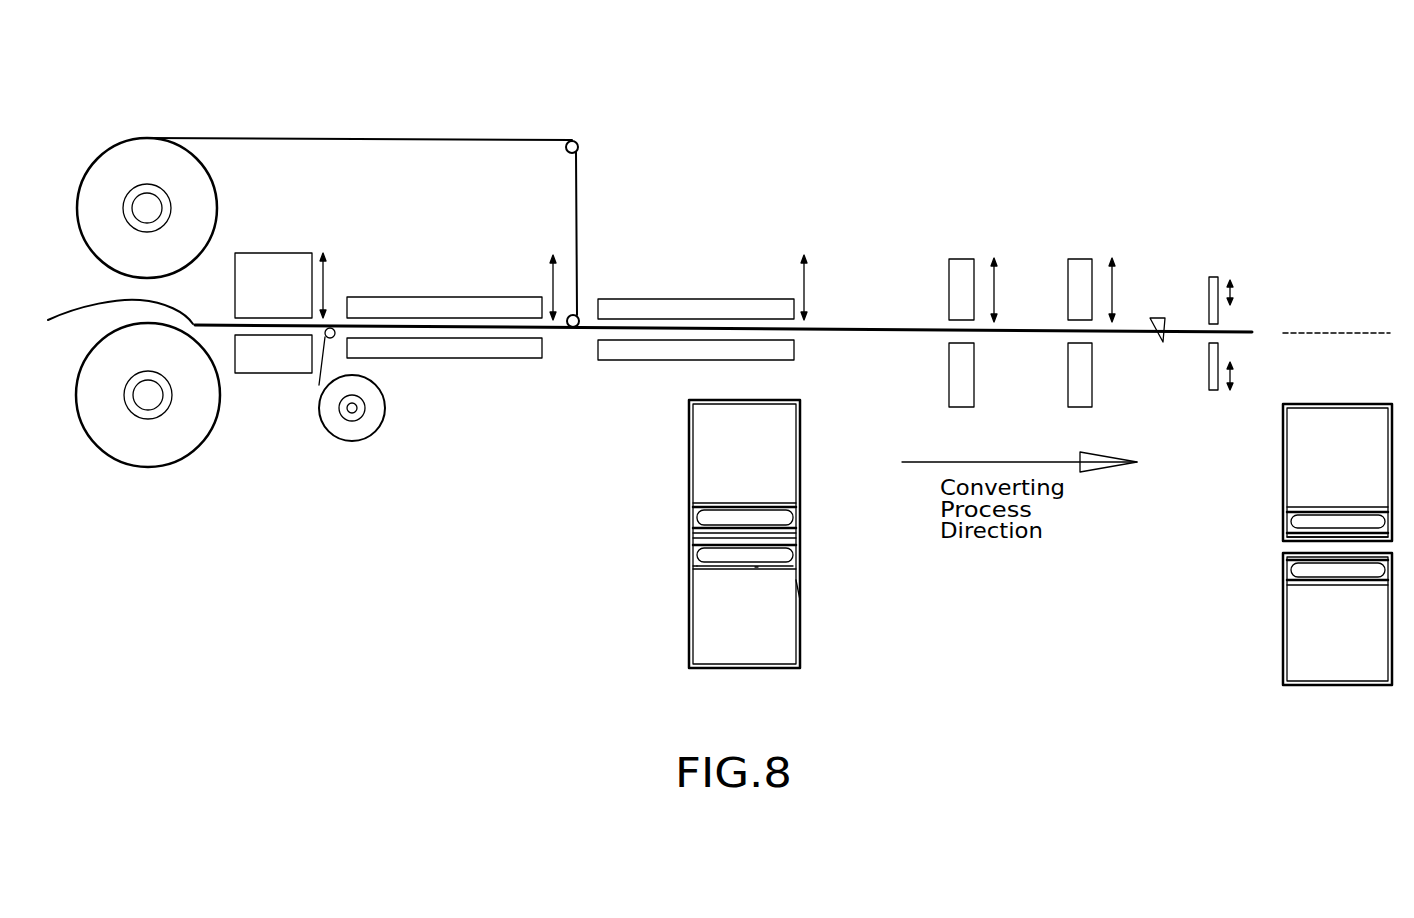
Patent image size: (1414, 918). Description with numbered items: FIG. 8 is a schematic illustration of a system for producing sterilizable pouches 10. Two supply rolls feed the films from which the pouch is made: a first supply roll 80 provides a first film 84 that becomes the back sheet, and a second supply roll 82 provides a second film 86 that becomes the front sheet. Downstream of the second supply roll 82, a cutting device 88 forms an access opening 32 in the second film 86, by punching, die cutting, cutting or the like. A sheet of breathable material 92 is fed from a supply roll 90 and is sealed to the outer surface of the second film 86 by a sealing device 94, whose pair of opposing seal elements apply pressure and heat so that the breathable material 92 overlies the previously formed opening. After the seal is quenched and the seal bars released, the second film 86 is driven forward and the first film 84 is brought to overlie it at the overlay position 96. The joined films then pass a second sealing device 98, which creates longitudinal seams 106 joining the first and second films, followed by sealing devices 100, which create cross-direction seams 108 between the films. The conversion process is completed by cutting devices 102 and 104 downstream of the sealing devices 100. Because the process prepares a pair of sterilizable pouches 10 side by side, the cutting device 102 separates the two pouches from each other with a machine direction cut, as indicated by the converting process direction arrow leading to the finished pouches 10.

The sterilizable pouch 10 is at (803, 478).
The access opening 32 is at (697, 567).
The first supply roll 80 is at (165, 137).
The second supply roll 82 is at (145, 472).
The first film 84 is at (420, 138).
The second film 86 is at (107, 321).
The cutting device 88 is at (253, 252).
The supply roll 90 is at (352, 446).
The sheet of breathable material 92 is at (318, 385).
The sealing device 94 is at (515, 292).
The overlay position 96 is at (568, 333).
The second sealing device 98 is at (768, 297).
The sealing devices 100 is at (1083, 258).
The cutting device 102 is at (1153, 317).
The cutting device 104 is at (1213, 277).
The longitudinal seams 106 is at (755, 567).
The cross-direction seams 108 is at (803, 592).